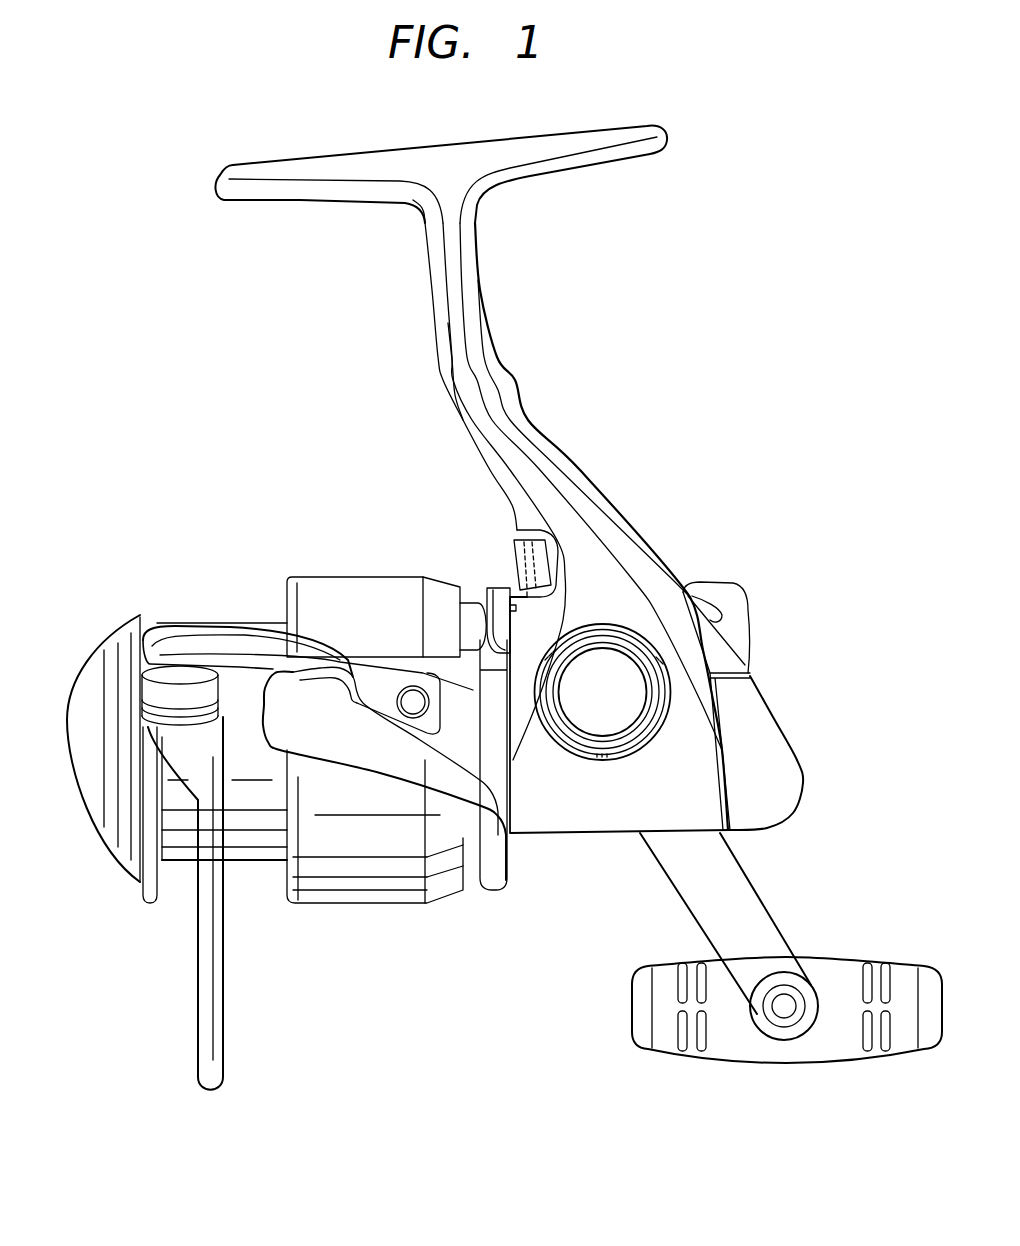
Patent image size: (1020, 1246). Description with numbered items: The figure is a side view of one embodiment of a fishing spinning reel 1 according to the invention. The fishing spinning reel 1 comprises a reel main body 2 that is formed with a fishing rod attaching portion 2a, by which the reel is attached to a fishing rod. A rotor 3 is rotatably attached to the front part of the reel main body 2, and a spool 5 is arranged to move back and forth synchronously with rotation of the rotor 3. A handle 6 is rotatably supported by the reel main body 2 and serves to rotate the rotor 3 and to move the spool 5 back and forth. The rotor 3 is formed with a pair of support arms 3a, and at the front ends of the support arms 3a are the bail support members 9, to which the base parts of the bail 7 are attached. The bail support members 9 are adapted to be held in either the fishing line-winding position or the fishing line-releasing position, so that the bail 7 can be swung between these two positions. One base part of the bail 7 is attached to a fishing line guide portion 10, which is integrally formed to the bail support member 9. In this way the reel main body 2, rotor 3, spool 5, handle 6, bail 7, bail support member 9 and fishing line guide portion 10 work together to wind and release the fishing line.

The fishing spinning reel 1 is at (770, 305).
The reel main body 2 is at (625, 540).
The fishing rod attaching portion 2a is at (466, 220).
The rotor 3 is at (490, 883).
The support arm 3a is at (386, 757).
The spool 5 is at (337, 592).
The handle 6 is at (765, 942).
The bail 7 is at (216, 1050).
The bail support member 9 is at (219, 650).
The fishing line guide portion 10 is at (167, 690).